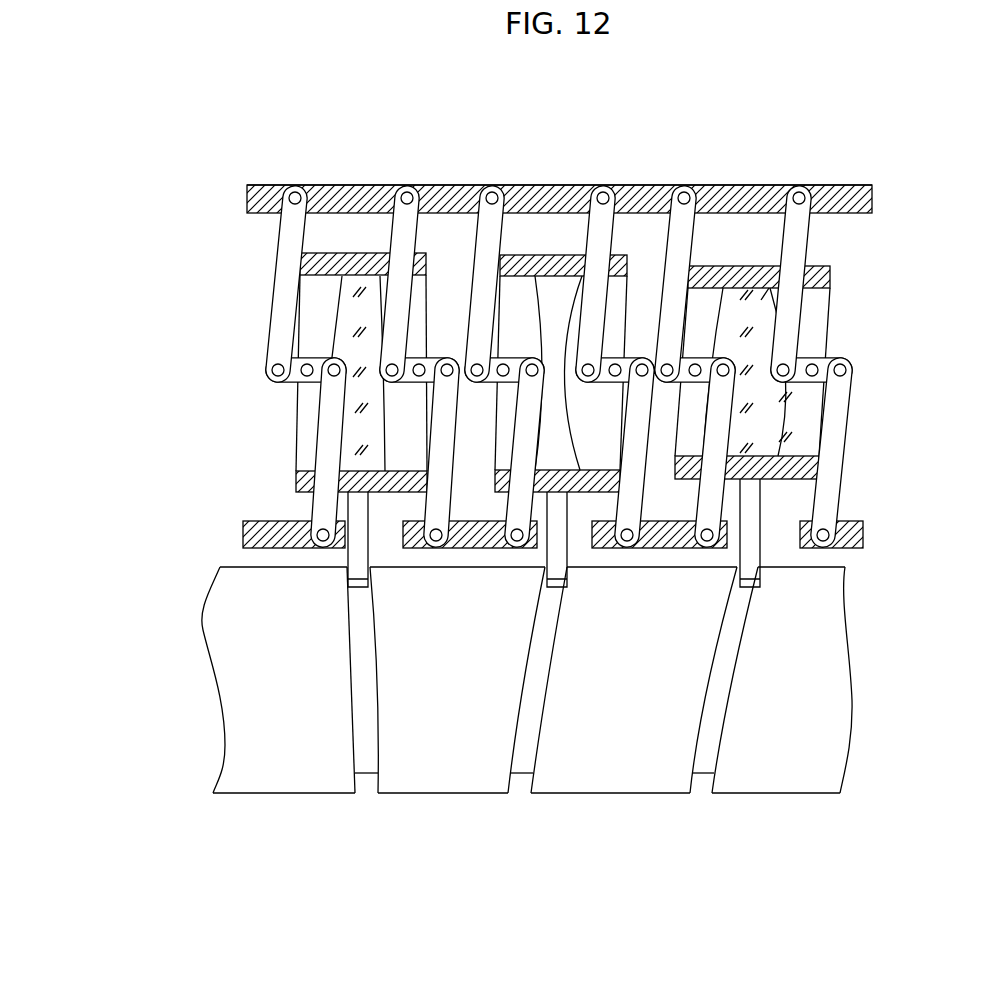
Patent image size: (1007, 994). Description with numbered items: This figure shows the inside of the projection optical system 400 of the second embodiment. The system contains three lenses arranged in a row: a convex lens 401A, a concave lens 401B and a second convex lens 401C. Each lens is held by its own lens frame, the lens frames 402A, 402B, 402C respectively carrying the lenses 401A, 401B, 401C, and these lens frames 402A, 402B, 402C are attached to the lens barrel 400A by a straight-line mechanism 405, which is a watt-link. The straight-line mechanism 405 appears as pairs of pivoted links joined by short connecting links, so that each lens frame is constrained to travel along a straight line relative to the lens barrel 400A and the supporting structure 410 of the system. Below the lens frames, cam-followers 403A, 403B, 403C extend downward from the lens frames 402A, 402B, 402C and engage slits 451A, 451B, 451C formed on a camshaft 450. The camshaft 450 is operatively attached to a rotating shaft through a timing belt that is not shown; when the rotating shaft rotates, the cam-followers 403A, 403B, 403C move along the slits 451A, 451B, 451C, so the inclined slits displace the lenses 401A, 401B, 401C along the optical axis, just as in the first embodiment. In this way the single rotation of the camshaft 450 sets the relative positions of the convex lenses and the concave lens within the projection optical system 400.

The projection optical system 400 is at (902, 152).
The lens barrel 400A is at (860, 184).
The frame 410 is at (842, 183).
The lens frame 402A is at (332, 265).
The lens frame 402B is at (533, 270).
The lens frame 402C is at (732, 273).
The convex lens 401A is at (373, 303).
The concave lens 401B is at (568, 300).
The convex lens 401C is at (770, 300).
The straight-line mechanism 405 is at (285, 308).
The cam-follower 403A is at (357, 560).
The cam-follower 403B is at (557, 550).
The cam-follower 403C is at (747, 550).
The camshaft 450 is at (822, 685).
The slit 451A is at (365, 785).
The slit 451B is at (518, 786).
The slit 451C is at (700, 785).